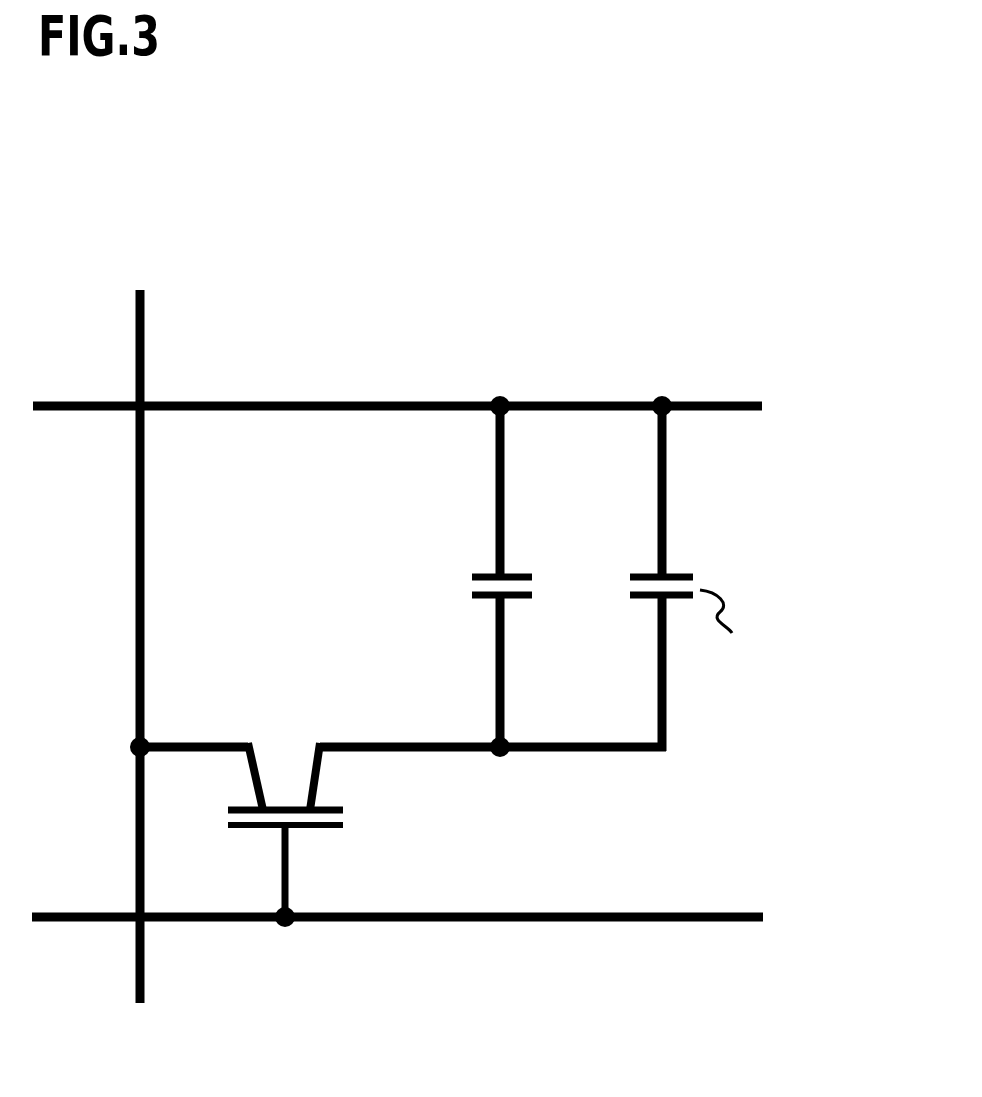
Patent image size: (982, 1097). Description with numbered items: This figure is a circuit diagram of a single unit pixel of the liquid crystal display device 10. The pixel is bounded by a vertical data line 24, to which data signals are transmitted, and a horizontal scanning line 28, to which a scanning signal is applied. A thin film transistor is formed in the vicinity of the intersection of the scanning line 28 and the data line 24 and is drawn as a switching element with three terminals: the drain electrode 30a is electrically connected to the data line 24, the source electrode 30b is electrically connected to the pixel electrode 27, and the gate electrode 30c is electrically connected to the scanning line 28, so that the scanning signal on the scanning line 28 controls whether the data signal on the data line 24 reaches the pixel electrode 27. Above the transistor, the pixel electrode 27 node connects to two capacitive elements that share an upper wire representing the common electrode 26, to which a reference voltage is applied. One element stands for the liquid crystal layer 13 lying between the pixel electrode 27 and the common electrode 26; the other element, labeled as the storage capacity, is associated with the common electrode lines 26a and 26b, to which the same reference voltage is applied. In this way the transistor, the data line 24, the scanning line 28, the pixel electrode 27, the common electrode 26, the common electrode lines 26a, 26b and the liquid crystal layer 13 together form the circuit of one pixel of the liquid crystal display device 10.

The liquid crystal display device 10 is at (96, 216).
The liquid crystal layer 13 is at (467, 582).
The data line 24 is at (145, 960).
The common electrode 26 is at (502, 398).
The common electrode line 26a is at (730, 400).
The common electrode line 26b is at (721, 531).
The pixel electrode 27 is at (500, 757).
The scanning line 28 is at (725, 924).
The drain electrode 30a is at (253, 777).
The source electrode 30b is at (317, 778).
The gate electrode 30c is at (307, 827).